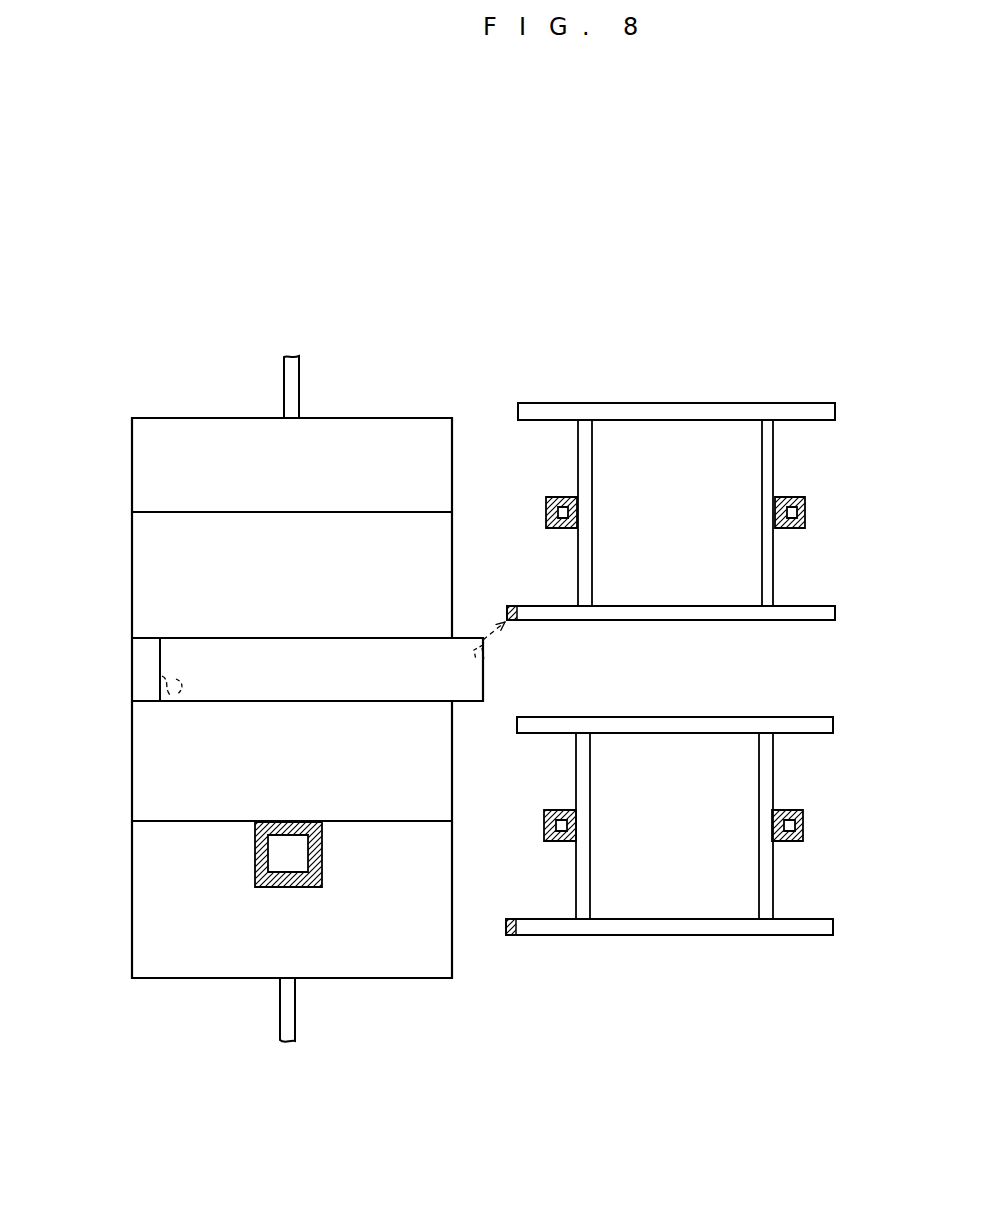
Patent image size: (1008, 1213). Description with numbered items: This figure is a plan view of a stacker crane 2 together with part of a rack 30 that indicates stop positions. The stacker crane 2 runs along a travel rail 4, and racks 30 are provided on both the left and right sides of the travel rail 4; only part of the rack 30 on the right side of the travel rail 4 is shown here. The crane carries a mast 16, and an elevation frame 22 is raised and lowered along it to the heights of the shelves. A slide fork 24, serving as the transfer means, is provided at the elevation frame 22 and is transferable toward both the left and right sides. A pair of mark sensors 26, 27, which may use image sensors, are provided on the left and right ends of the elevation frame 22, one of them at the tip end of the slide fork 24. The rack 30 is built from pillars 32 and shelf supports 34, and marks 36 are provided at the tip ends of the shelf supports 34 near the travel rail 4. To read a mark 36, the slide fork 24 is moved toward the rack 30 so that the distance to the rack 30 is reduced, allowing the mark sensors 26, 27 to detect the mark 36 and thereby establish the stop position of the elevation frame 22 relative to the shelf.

The stacker crane 2 is at (202, 983).
The travel rail 4 is at (296, 1018).
The mast 16 is at (255, 862).
The elevation frame 22 is at (150, 762).
The slide fork 24 is at (208, 648).
The mark sensor 26 is at (485, 665).
The mark sensor 27 is at (158, 672).
The rack 30 is at (680, 716).
The pillar 32 is at (548, 497).
The shelf support 34 is at (810, 606).
The mark 36 is at (510, 604).